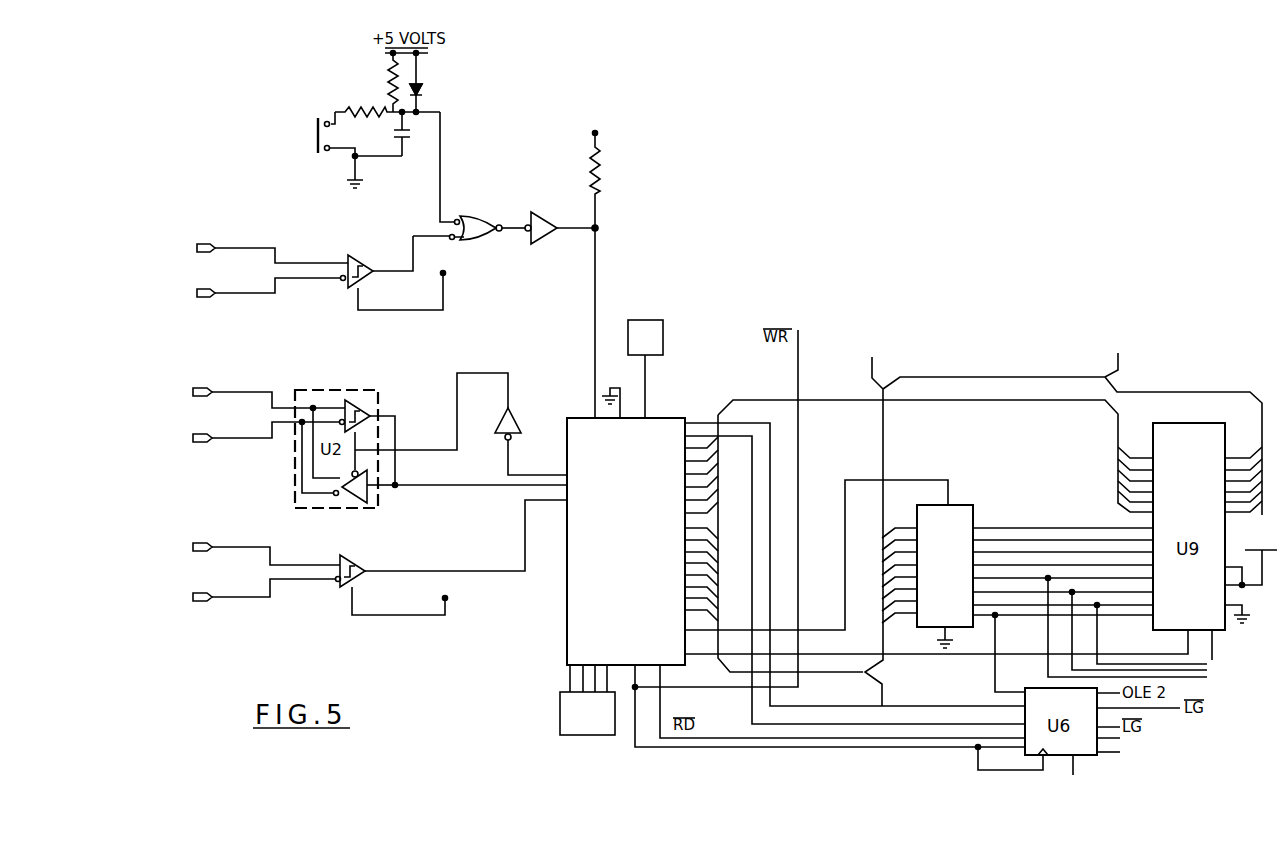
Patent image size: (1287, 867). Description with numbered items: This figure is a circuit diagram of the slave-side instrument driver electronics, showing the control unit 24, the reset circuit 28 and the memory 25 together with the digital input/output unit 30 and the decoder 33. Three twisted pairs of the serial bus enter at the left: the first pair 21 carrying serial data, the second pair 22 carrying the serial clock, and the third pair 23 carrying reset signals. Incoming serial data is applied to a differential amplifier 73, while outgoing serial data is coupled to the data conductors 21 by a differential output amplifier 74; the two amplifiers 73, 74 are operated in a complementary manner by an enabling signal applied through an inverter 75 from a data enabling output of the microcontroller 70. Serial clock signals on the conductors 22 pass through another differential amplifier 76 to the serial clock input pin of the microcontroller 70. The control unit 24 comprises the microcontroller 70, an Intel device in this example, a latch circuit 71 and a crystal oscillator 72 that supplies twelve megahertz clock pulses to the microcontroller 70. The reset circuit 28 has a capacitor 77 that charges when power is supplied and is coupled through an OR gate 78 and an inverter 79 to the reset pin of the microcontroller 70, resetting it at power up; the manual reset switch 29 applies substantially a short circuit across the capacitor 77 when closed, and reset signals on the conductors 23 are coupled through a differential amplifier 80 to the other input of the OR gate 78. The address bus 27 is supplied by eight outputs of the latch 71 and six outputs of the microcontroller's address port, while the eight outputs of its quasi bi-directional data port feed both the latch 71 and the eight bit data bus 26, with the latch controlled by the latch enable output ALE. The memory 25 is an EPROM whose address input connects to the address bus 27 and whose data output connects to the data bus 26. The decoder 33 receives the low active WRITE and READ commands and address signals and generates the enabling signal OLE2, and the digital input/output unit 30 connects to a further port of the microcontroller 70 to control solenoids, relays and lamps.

The first pair of conductors 21 is at (242, 383).
The second pair of conductors 22 is at (271, 541).
The third pair of conductors 23 is at (260, 243).
The control unit 24 is at (853, 351).
The memory 25 is at (1212, 660).
The data bus 26 is at (1004, 378).
The address bus 27 is at (1106, 470).
The reset circuit 28 is at (513, 154).
The manual reset switch 29 is at (300, 135).
The digital input/output unit 30 is at (560, 716).
The decoder 33 is at (1088, 757).
The microcontroller 70 is at (567, 626).
The latch circuit 71 is at (974, 515).
The crystal oscillator 72 is at (664, 341).
The differential amplifier 73 is at (363, 400).
The differential output amplifier 74 is at (360, 505).
The inverter 75 is at (519, 414).
The differential amplifier 76 is at (363, 562).
The capacitor 77 is at (412, 141).
The OR gate 78 is at (487, 215).
The inverter 79 is at (549, 213).
The differential amplifier 80 is at (416, 269).